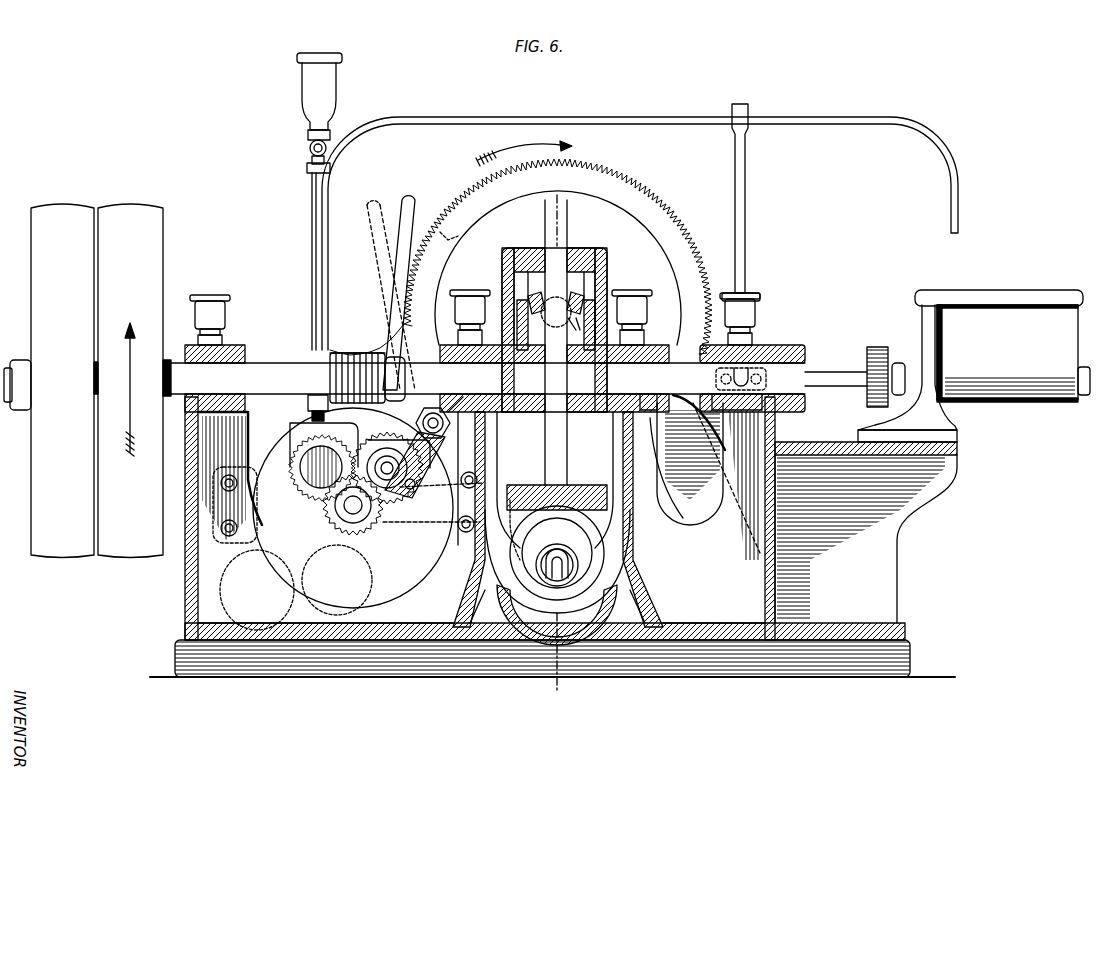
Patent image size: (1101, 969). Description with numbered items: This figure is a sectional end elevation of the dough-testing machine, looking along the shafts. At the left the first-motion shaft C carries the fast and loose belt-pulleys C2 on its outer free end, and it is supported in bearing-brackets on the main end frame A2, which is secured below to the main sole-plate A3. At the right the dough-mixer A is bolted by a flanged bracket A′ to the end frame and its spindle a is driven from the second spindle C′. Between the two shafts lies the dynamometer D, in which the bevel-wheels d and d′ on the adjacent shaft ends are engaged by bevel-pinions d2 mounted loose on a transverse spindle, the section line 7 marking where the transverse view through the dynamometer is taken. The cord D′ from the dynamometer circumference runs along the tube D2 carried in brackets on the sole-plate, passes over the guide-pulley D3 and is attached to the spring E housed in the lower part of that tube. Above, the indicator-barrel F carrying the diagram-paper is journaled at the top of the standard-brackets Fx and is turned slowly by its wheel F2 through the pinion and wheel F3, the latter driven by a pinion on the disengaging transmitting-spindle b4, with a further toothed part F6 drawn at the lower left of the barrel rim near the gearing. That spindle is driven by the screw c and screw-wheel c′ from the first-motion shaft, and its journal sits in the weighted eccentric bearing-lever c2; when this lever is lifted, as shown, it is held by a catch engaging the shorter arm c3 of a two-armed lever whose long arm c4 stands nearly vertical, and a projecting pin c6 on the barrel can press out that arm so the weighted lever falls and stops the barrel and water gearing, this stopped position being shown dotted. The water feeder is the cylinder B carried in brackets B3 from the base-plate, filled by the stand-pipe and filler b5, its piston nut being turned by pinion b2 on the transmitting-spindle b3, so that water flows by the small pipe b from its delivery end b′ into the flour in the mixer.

The dough-mixer A is at (1002, 346).
The flanged bracket A′ is at (907, 373).
The main end frame A2 is at (571, 518).
The main sole-plate A3 is at (915, 650).
The spindle a is at (845, 372).
The water-cylinder B is at (322, 468).
The brackets B3 is at (300, 462).
The small pipe b is at (416, 118).
The delivery end b′ is at (306, 400).
The pinion b2 is at (380, 452).
The transmitting-spindle b3 is at (387, 461).
The disengaging transmitting-spindle b4 is at (345, 478).
The stand-pipe and filler b5 is at (312, 332).
The first-motion shaft C is at (485, 378).
The second spindle C′ is at (728, 379).
The fast belt-pulley C2 is at (132, 381).
The screw c is at (342, 355).
The screw-wheel c′ is at (382, 436).
The weighted eccentric bearing-lever c2 is at (296, 577).
The shorter arm c3 is at (433, 490).
The long arm c4 is at (408, 210).
The projecting pin c6 is at (450, 222).
The dynamometer D is at (582, 272).
The cord D′ is at (557, 553).
The tube D2 is at (506, 536).
The guide-pulley D3 is at (557, 553).
The bevel-wheel d is at (530, 300).
The bevel-wheel d′ is at (580, 401).
The bevel-pinions d2 is at (558, 377).
The spring E is at (565, 565).
The indicator-barrel F is at (558, 268).
The wheel F2 is at (558, 247).
The wheel F3 is at (384, 520).
The gear segment F6 is at (367, 339).
The standard-brackets Fx is at (705, 478).
The section line 7 is at (559, 448).